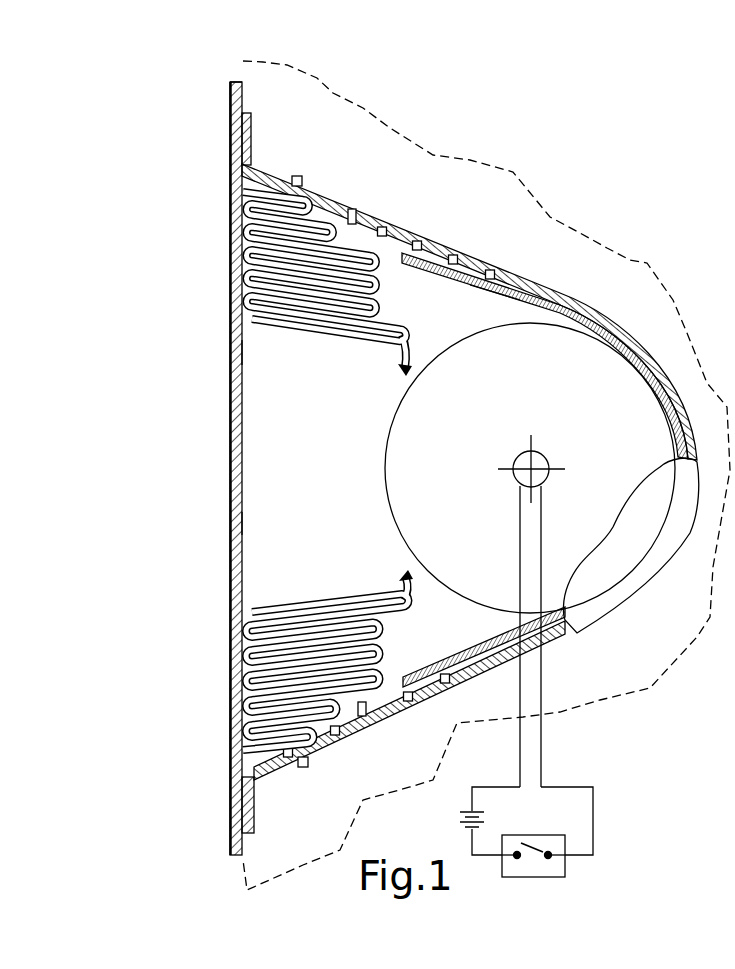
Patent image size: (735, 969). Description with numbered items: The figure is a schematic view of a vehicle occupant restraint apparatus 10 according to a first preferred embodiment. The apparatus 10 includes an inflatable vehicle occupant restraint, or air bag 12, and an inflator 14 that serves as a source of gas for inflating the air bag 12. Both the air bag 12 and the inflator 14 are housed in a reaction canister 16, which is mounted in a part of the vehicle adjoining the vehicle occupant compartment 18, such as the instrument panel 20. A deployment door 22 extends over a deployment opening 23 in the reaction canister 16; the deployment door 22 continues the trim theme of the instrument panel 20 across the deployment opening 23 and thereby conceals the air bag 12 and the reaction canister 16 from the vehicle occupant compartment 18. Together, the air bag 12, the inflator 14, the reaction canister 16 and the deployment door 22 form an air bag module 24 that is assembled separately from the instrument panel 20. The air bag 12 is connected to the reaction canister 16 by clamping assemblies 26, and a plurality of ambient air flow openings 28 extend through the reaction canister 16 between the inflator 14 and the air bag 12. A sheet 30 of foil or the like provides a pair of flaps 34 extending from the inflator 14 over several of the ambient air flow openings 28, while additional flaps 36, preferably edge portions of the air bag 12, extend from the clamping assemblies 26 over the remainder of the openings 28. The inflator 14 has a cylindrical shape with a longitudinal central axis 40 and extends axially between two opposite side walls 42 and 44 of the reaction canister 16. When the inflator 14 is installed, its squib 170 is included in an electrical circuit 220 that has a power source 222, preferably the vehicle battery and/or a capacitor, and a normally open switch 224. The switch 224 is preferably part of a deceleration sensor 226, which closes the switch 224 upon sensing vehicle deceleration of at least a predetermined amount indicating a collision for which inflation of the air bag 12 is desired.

The vehicle occupant restraint apparatus 10 is at (203, 133).
The inflatable vehicle occupant restraint 12 is at (243, 235).
The inflator 14 is at (383, 452).
The reaction canister 16 is at (581, 303).
The vehicle occupant compartment 18 is at (208, 395).
The instrument panel 20 is at (240, 72).
The deployment door 22 is at (232, 153).
The deployment opening 23 is at (239, 352).
The air bag module 24 is at (512, 252).
The clamping assemblies 26 is at (291, 172).
The ambient air flow openings 28 is at (457, 254).
The sheet 30 is at (486, 302).
The flaps 34 is at (403, 262).
The additional flaps 36 is at (353, 210).
The longitudinal central axis 40 is at (540, 452).
The side wall 42 is at (263, 520).
The side wall 44 is at (630, 521).
The squib 170 is at (513, 457).
The electrical circuit 220 is at (491, 782).
The power source 222 is at (465, 814).
The normally open switch 224 is at (531, 850).
The deceleration sensor 226 is at (533, 877).